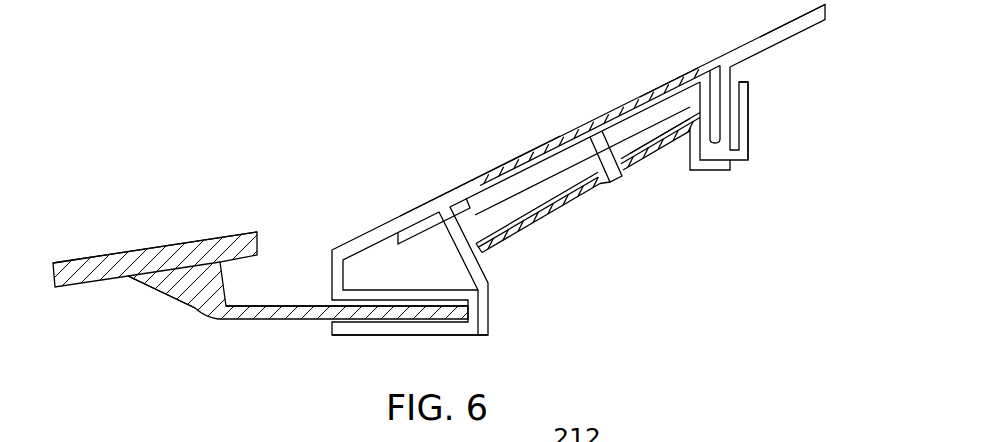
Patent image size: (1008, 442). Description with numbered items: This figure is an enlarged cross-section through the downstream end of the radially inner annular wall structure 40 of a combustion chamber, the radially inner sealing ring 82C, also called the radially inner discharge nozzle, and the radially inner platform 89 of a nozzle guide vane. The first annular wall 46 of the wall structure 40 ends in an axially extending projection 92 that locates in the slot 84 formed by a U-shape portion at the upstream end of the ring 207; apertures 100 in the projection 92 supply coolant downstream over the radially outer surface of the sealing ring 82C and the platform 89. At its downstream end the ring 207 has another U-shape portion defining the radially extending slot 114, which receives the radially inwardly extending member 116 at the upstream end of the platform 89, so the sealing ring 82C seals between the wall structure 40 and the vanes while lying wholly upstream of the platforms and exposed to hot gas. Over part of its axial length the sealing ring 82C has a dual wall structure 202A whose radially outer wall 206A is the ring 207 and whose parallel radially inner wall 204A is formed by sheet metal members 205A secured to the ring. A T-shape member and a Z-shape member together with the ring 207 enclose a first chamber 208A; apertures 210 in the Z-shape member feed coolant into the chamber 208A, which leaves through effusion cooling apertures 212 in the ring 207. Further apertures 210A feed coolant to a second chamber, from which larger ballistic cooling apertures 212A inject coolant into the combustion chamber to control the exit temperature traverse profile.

The radially inner annular wall structure 40 is at (132, 322).
The first annular wall 46 is at (83, 282).
The slot 84 is at (405, 323).
The radially inner platform 89 is at (809, 26).
The projection 92 is at (285, 320).
The apertures 100 is at (193, 287).
The slot 114 is at (714, 122).
The radially inwardly extending member 116 is at (726, 100).
The dual wall structure 202A is at (622, 192).
The radially inner wall 204A is at (613, 192).
The member 205A is at (582, 203).
The radially outer wall 206A is at (463, 190).
The ring 207 is at (350, 245).
The first chamber 208A is at (581, 162).
The apertures 210 is at (532, 230).
The apertures 210A is at (671, 150).
The effusion cooling apertures 212 is at (568, 135).
The ballistic cooling apertures 212A is at (669, 81).
The radially inner sealing ring 82C is at (672, 326).